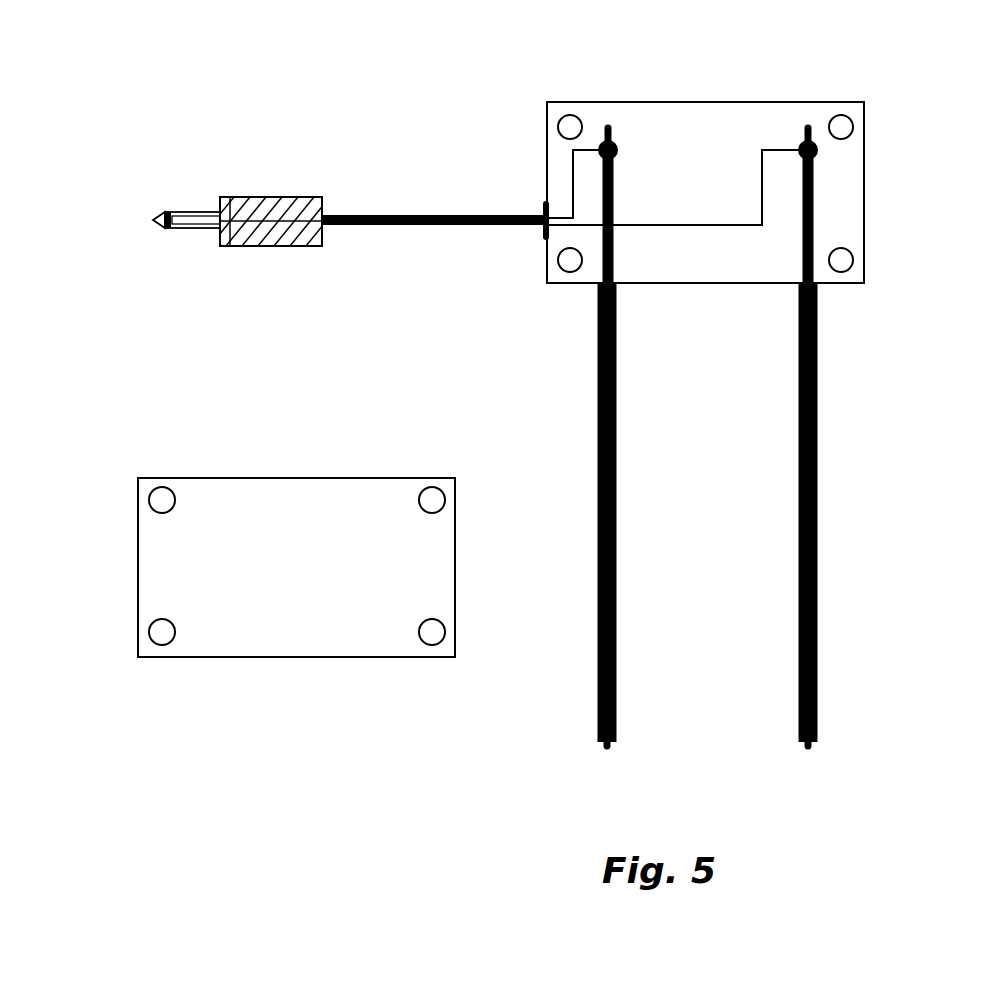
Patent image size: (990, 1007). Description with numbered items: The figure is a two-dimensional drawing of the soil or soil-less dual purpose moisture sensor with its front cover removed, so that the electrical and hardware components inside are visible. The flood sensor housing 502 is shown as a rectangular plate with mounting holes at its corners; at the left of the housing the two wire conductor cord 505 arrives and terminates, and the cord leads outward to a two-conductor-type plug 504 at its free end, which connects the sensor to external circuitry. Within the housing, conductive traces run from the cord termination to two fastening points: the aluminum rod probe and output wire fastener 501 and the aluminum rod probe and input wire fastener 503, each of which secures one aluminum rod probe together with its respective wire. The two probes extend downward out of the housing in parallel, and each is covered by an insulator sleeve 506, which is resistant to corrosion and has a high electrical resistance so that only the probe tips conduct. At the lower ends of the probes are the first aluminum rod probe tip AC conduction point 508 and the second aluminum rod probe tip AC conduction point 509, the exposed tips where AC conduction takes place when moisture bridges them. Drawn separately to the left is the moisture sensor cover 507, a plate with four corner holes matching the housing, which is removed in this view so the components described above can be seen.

The aluminum rod probe and output wire fastener 501 is at (608, 128).
The flood sensor housing 502 is at (722, 102).
The aluminum rod probe and input wire fastener 503 is at (809, 128).
The two-conductor-type plug 504 is at (273, 197).
The two wire conductor cord 505 is at (463, 213).
The insulator sleeve 506 is at (597, 527).
The moisture sensor cover 507 is at (311, 515).
The first aluminum rod probe tip AC conduction point 508 is at (607, 750).
The second aluminum rod probe tip AC conduction point 509 is at (808, 750).